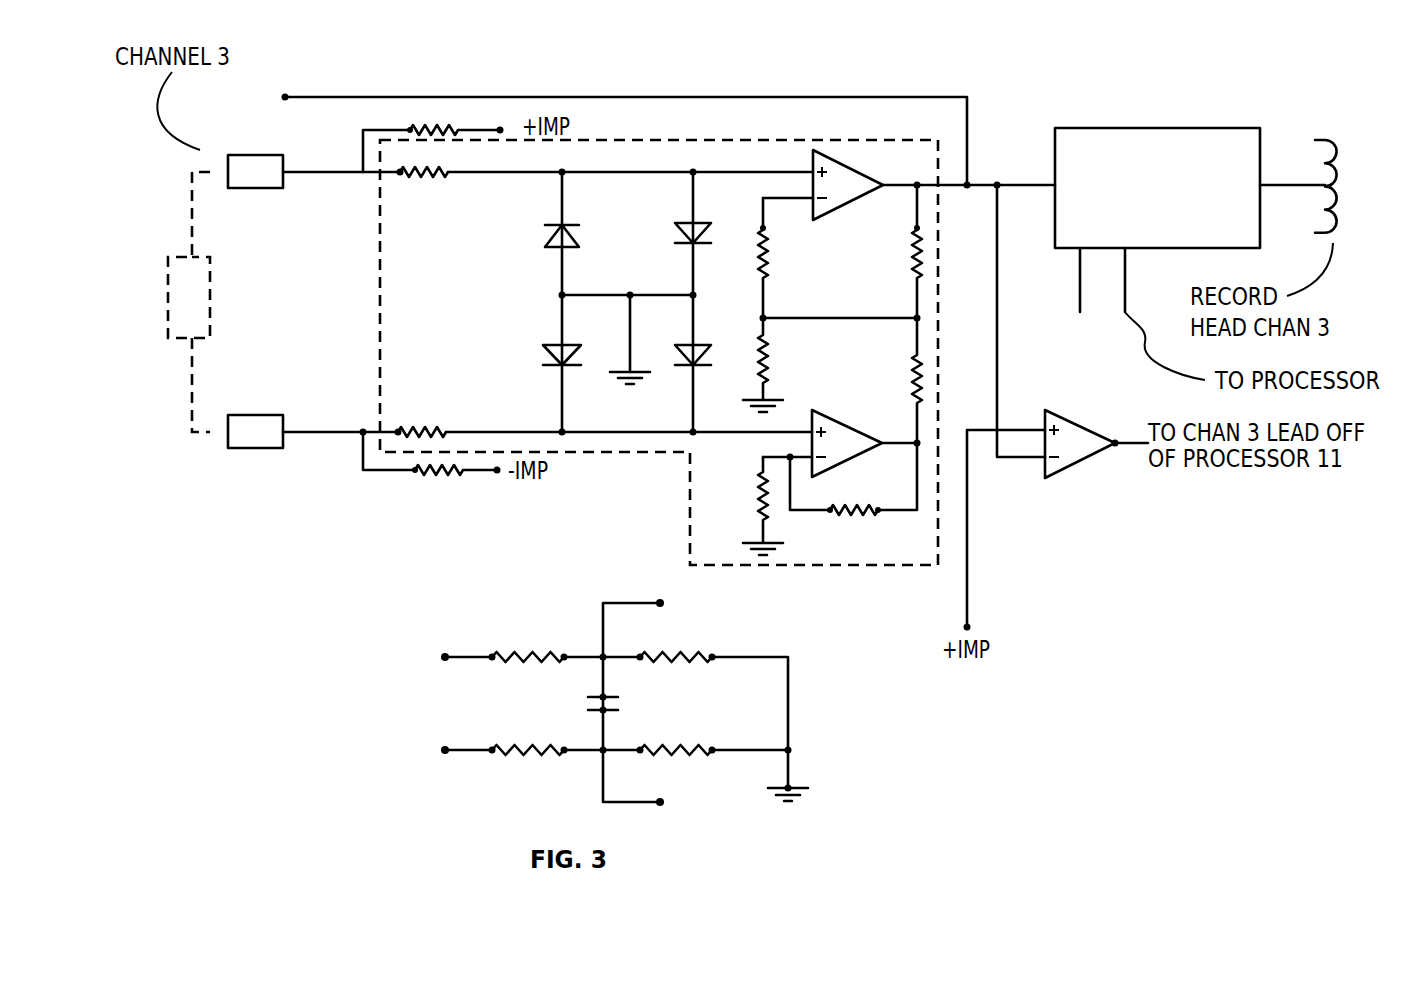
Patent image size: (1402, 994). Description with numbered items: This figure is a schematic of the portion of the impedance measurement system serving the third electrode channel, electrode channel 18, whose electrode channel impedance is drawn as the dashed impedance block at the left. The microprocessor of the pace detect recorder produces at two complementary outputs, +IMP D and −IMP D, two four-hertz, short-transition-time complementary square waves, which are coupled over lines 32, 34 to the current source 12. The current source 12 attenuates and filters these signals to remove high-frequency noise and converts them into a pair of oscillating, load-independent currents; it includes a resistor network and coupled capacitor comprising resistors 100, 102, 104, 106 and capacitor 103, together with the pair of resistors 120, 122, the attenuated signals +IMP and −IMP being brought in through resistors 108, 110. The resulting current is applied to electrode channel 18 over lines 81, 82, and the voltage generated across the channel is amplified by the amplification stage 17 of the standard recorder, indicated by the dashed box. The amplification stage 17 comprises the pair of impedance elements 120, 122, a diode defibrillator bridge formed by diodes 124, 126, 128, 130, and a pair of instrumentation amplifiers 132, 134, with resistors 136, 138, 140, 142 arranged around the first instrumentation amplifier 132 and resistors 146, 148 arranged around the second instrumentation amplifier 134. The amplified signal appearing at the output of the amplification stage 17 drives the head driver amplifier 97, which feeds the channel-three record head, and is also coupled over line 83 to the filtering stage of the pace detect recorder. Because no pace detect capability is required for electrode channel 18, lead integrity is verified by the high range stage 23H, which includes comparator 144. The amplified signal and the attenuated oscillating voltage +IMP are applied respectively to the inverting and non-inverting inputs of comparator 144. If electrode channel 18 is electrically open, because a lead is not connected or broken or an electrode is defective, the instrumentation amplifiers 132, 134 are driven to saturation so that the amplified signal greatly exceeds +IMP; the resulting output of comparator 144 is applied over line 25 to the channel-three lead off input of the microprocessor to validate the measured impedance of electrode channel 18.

The current source 12 is at (534, 697).
The amplification stage 17 is at (633, 140).
The electrode channel 18 is at (162, 330).
The high range stage 23H is at (1070, 500).
The line 25 is at (1127, 447).
The line 32 is at (470, 656).
The line 34 is at (465, 752).
The line 81 is at (363, 148).
The line 82 is at (360, 468).
The line 83 is at (403, 97).
The head driver amplifier 97 is at (1140, 128).
The resistor 100 is at (531, 655).
The resistor 102 is at (670, 660).
The capacitor 103 is at (608, 714).
The resistor 104 is at (532, 750).
The resistor 106 is at (670, 750).
The resistor 108 is at (450, 130).
The resistor 110 is at (435, 480).
The resistor 120 is at (406, 176).
The resistor 122 is at (420, 430).
The diode 124 is at (545, 238).
The diode 126 is at (675, 237).
The diode 128 is at (548, 353).
The diode 130 is at (678, 353).
The instrumentation amplifier 132 is at (852, 200).
The instrumentation amplifier 134 is at (860, 433).
The resistor 136 is at (772, 250).
The resistor 138 is at (912, 256).
The resistor 140 is at (913, 380).
The resistor 142 is at (768, 357).
The comparator 144 is at (1100, 428).
The resistor 146 is at (853, 515).
The resistor 148 is at (760, 506).